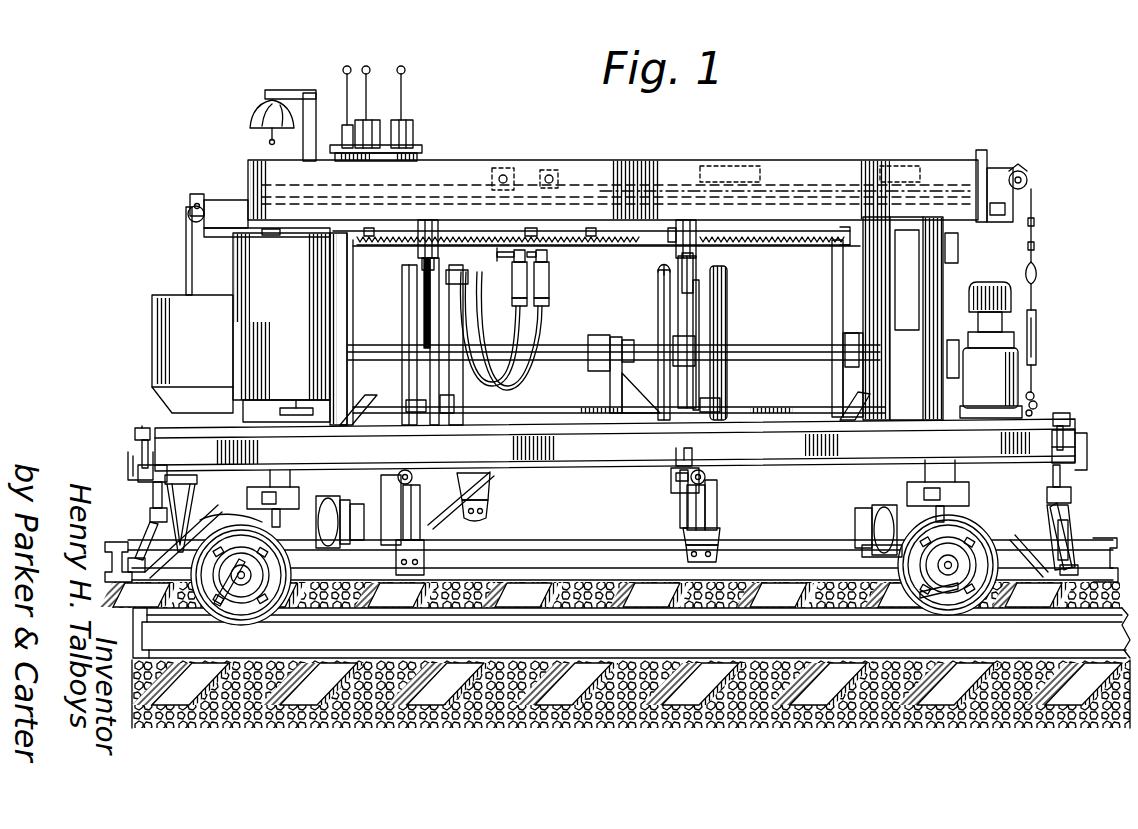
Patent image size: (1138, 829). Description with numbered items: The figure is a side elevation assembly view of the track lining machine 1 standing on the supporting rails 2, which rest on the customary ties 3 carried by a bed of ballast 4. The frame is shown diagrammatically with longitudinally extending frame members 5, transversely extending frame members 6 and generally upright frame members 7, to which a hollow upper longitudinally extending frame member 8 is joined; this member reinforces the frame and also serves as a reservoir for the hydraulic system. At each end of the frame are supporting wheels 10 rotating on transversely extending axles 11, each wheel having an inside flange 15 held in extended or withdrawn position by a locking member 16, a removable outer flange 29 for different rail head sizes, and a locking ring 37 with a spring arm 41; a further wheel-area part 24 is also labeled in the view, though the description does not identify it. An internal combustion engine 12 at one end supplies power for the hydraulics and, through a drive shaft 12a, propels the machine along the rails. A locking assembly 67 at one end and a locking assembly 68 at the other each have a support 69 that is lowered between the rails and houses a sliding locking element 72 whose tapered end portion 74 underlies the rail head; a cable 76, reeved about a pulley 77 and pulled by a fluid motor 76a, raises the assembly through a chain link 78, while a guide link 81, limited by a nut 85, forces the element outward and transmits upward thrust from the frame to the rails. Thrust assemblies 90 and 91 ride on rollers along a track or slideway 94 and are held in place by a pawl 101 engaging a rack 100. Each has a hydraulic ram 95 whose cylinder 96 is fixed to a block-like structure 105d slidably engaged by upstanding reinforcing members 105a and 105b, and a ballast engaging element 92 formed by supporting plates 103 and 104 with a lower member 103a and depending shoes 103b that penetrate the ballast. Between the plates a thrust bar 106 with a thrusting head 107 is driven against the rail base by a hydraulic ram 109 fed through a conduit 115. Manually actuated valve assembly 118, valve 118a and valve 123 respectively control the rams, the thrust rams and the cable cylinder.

The track lining machine 1 is at (1044, 311).
The supporting rails 2 is at (578, 548).
The ties 3 is at (292, 708).
The ballast 4 is at (365, 720).
The longitudinally extending frame members 5 is at (815, 412).
The transversely extending frame members 6 is at (364, 406).
The upright frame members 7 is at (938, 283).
The upper longitudinally extending frame member 8 is at (900, 168).
The supporting wheels 10 is at (206, 601).
The axles 11 is at (246, 584).
The internal combustion engine 12 is at (1002, 368).
The drive shaft 12a is at (790, 350).
The inside flange 15 is at (225, 527).
The locking member 16 is at (278, 520).
The spring box 24 is at (283, 494).
The removable outer flange 29 is at (203, 586).
The locking ring 37 is at (276, 608).
The spring arm 41 is at (232, 603).
The locking assembly 67 is at (126, 510).
The locking assembly 68 is at (1077, 518).
The support 69 is at (146, 527).
The locking element 72 is at (134, 546).
The tapered end portion 74 is at (136, 574).
The cable 76 is at (184, 265).
The fluid motor 76a is at (760, 180).
The pulley 77 is at (1021, 176).
The chain link 78 is at (198, 476).
The guide link 81 is at (1076, 436).
The nut 85 is at (141, 436).
The thrust assembly 90 is at (732, 291).
The thrust assembly 91 is at (478, 397).
The ballast engaging element 92 is at (714, 536).
The track or slideway 94 is at (208, 223).
The hydraulic ram 95 is at (428, 322).
The cylinder 96 is at (402, 296).
The rack 100 is at (383, 246).
The pawl 101 is at (434, 240).
The supporting plate 103 is at (475, 478).
The lower member 103a is at (466, 518).
The shoes 103b is at (487, 502).
The supporting plate 104 is at (670, 486).
The upstanding reinforcing member 105a is at (522, 268).
The upstanding reinforcing member 105b is at (424, 302).
The block-like structure 105d is at (455, 418).
The thrust bar 106 is at (436, 523).
The thrusting head 107 is at (397, 545).
The hydraulic ram 109 is at (402, 468).
The conduit 115 is at (676, 455).
The manually actuated valve assembly 118 is at (374, 122).
The manually actuated valve 118a is at (413, 136).
The manually actuated valve 123 is at (345, 134).